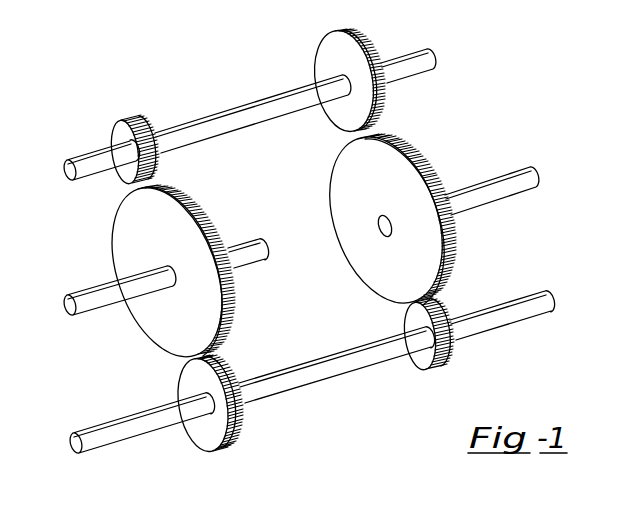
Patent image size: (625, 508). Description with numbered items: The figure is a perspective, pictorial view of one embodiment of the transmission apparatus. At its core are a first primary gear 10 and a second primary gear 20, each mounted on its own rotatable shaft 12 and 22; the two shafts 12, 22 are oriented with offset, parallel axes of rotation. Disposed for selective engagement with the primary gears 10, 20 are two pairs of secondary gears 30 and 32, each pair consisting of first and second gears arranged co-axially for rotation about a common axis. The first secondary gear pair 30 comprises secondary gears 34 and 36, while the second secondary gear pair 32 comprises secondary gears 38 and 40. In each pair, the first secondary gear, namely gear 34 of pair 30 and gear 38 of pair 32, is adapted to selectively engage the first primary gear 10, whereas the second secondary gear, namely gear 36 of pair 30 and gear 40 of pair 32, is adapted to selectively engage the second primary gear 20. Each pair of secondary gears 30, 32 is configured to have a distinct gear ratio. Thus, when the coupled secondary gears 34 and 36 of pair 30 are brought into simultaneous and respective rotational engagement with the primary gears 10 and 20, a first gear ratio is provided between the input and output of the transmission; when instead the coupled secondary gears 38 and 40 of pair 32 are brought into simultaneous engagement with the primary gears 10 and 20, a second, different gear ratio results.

The first primary gear 10 is at (131, 231).
The rotatable shaft 12 is at (81, 296).
The second primary gear 20 is at (387, 157).
The rotatable shaft 22 is at (475, 207).
The first pair of secondary gears 30 is at (214, 78).
The second pair of secondary gears 32 is at (313, 396).
The first secondary gear 34 is at (113, 135).
The second secondary gear 36 is at (324, 43).
The first secondary gear 38 is at (212, 433).
The second secondary gear 40 is at (441, 357).